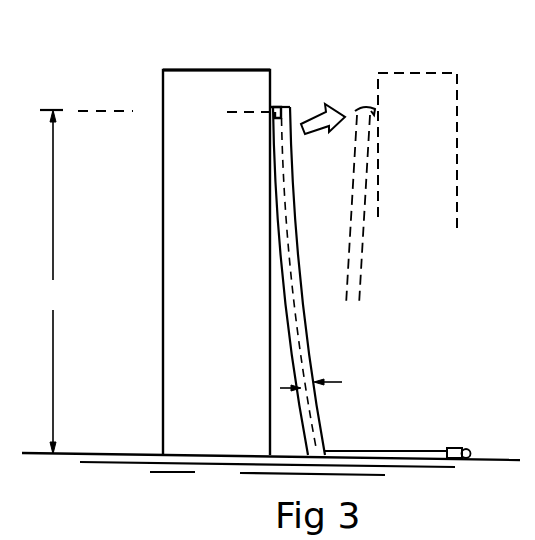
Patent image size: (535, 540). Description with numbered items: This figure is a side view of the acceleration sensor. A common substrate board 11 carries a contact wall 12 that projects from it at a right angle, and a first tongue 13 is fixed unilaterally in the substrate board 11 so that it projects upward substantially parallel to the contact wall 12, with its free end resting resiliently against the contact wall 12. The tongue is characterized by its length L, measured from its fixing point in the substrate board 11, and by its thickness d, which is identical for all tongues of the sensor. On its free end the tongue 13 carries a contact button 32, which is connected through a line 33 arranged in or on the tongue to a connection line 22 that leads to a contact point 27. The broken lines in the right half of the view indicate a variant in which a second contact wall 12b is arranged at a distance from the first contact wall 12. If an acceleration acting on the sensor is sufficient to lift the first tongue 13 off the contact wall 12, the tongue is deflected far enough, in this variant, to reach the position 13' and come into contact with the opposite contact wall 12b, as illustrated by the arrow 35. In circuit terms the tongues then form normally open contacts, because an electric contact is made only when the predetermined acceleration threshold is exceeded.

The substrate board 11 is at (116, 462).
The contact wall 12 is at (230, 85).
The second contact wall 12b is at (430, 84).
The first tongue 13 is at (318, 281).
The deflected first tongue 13' is at (360, 157).
The connection line 22 is at (365, 450).
The contact point 27 is at (464, 448).
The contact button 32 is at (272, 100).
The line 33 is at (287, 257).
The arrow 35 is at (321, 135).
The tongue length L is at (58, 303).
The tongue thickness d is at (308, 388).